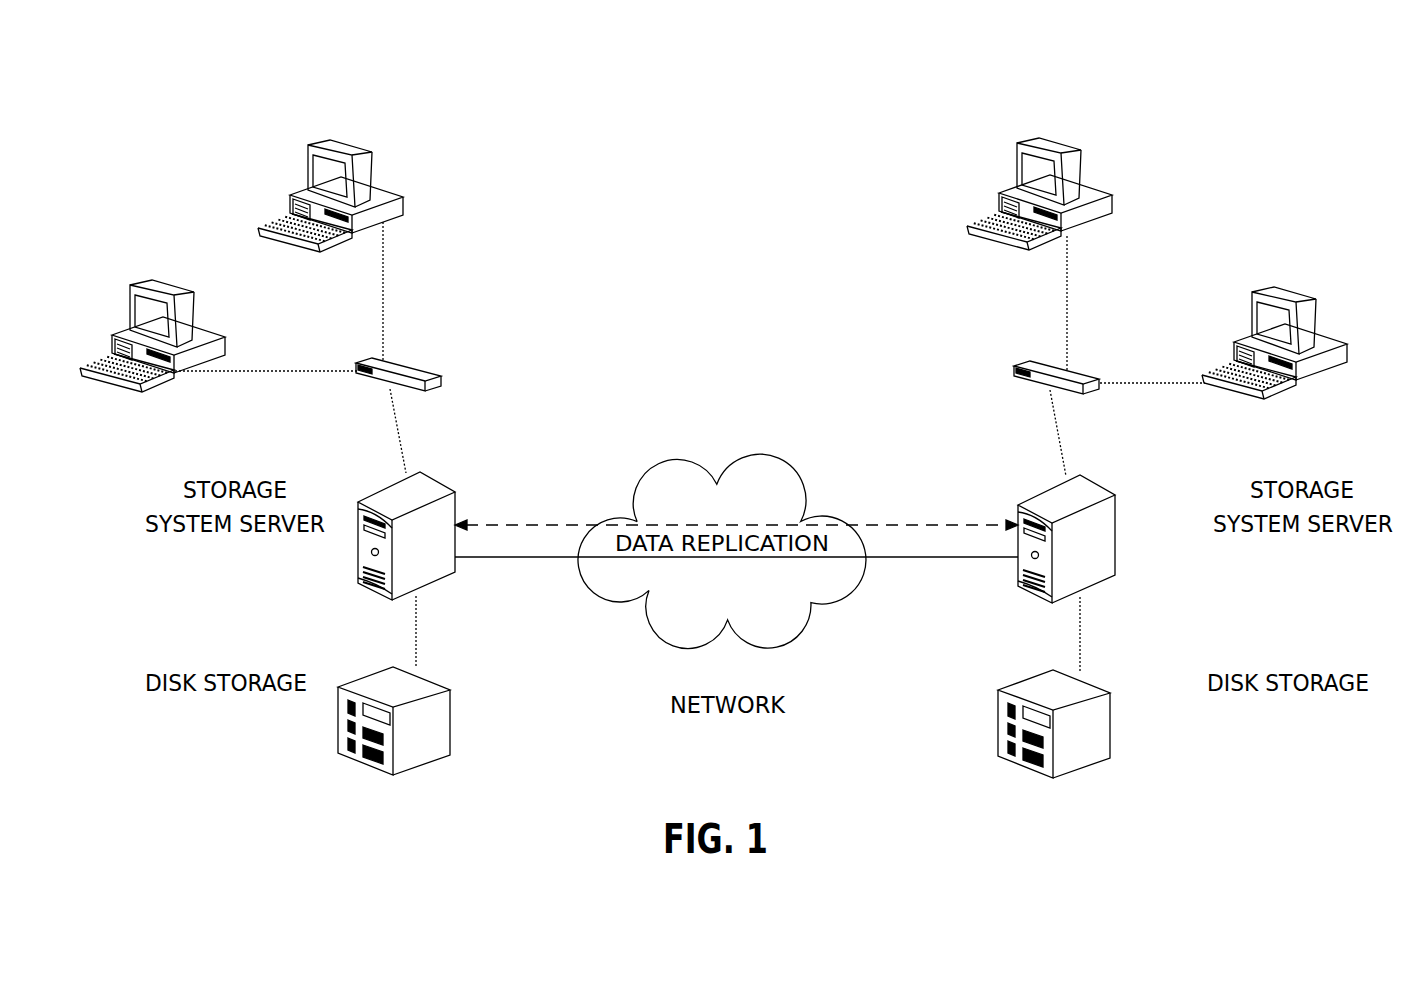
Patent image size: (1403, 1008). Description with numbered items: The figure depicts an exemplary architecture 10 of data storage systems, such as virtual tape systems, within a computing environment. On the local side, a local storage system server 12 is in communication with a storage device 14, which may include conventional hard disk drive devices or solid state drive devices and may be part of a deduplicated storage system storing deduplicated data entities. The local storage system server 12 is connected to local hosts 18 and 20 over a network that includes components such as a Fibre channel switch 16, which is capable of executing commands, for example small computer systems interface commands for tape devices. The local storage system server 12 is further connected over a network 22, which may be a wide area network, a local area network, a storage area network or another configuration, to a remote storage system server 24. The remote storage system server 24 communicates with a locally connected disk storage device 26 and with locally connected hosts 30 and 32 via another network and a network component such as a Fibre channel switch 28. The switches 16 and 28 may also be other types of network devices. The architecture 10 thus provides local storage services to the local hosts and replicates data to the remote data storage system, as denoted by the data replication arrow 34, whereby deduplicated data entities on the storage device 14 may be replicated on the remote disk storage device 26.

The architecture 10 is at (1285, 103).
The local storage system server 12 is at (430, 478).
The storage device 14 is at (450, 722).
The Fibre channel switch 16 is at (400, 362).
The local host 18 is at (202, 310).
The local host 20 is at (380, 167).
The network 22 is at (800, 473).
The remote storage system server 24 is at (1115, 542).
The disk storage device 26 is at (1108, 728).
The Fibre channel switch 28 is at (1035, 362).
The host 30 is at (1083, 167).
The host 32 is at (1320, 317).
The data replication arrow 34 is at (894, 520).